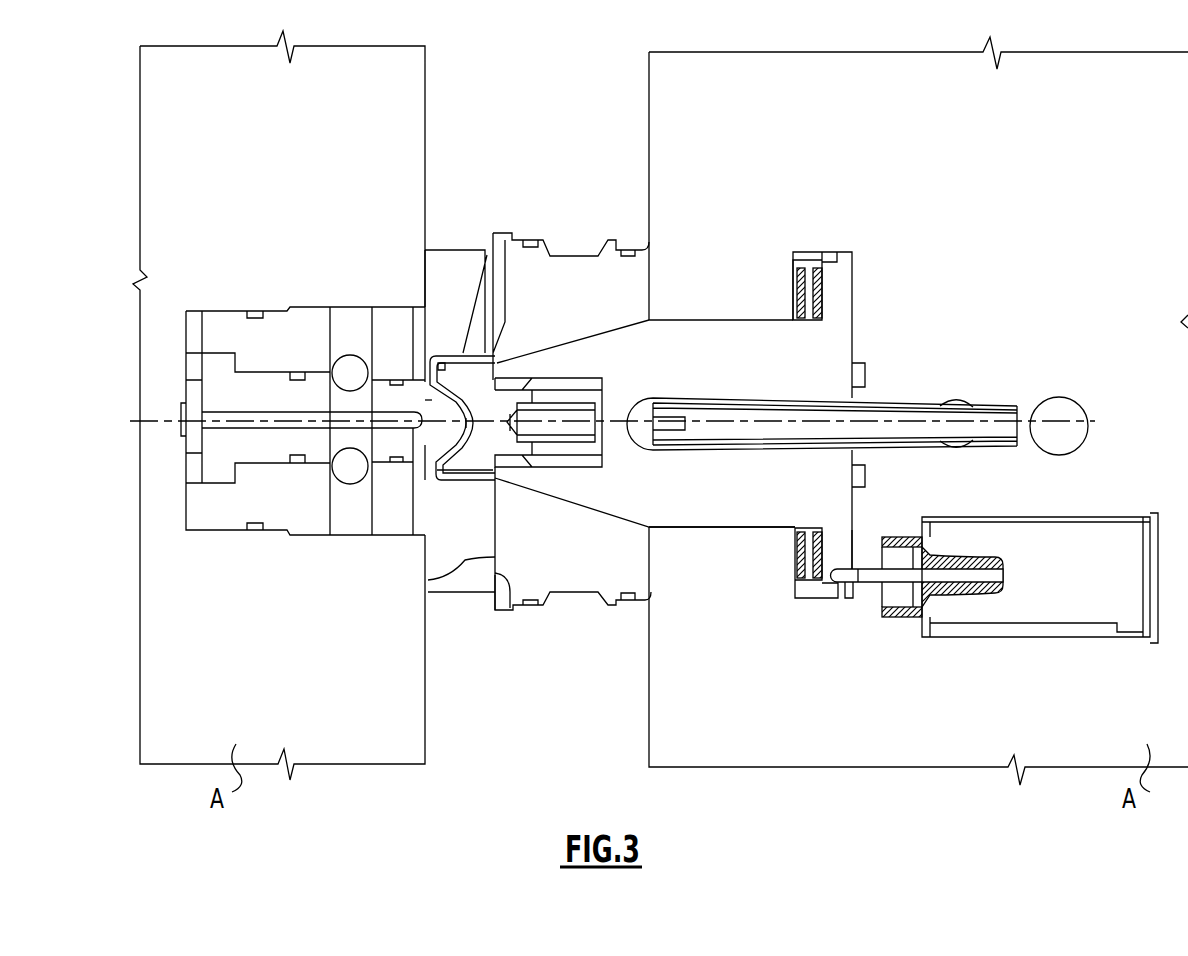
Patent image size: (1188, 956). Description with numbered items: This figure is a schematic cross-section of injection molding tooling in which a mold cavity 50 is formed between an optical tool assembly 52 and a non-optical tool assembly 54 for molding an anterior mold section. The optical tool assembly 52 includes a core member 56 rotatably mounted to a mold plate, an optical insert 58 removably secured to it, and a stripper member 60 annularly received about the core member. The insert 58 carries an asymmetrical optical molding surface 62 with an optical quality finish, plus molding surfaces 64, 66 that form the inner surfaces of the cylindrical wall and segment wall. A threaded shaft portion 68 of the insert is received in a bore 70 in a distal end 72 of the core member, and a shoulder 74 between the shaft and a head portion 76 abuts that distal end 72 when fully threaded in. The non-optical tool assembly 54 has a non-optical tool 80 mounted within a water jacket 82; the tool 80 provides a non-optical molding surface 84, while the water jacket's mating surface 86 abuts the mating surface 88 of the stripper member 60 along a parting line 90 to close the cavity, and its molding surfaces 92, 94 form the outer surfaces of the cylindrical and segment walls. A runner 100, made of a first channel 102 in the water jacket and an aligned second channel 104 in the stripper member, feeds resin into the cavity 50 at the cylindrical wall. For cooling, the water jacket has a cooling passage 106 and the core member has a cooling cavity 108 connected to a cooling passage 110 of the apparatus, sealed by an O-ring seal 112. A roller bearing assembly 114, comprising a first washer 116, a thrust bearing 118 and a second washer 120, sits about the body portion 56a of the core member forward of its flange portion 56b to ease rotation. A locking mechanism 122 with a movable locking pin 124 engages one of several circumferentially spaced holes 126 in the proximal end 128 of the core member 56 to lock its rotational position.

The mold cavity 50 is at (400, 536).
The optical tool assembly 52 is at (638, 220).
The non-optical tool assembly 54 is at (373, 250).
The core member 56 is at (825, 348).
The body portion 56a is at (750, 513).
The flange portion 56b is at (848, 540).
The optical insert 58 is at (503, 372).
The stripper member 60 is at (563, 580).
The optical molding surface 62 is at (465, 393).
The molding surface 64 is at (462, 490).
The molding surface 66 is at (436, 352).
The threaded shaft portion 68 is at (565, 395).
The bore 70 is at (573, 468).
The distal end 72 is at (537, 480).
The shoulder 74 is at (464, 450).
The head portion 76 is at (482, 467).
The non-optical tool 80 is at (427, 445).
The water jacket 82 is at (419, 306).
The non-optical molding surface 84 is at (445, 400).
The mating surface 86 is at (503, 608).
The mating surface 88 is at (494, 603).
The parting line 90 is at (428, 580).
The molding surface 92 is at (445, 357).
The molding surface 94 is at (440, 372).
The runner 100 is at (484, 258).
The first channel 102 is at (482, 250).
The second channel 104 is at (505, 288).
The cooling passage 106 is at (350, 373).
The cooling cavity 108 is at (743, 437).
The cooling passage 110 is at (918, 410).
The O-ring seal 112 is at (866, 374).
The roller bearing assembly 114 is at (782, 595).
The first washer 116 is at (780, 278).
The thrust bearing 118 is at (812, 266).
The second washer 120 is at (838, 282).
The locking mechanism 122 is at (1100, 545).
The locking pin 124 is at (1003, 582).
The circumferentially spaced holes 126 is at (849, 600).
The proximal end 128 is at (858, 592).